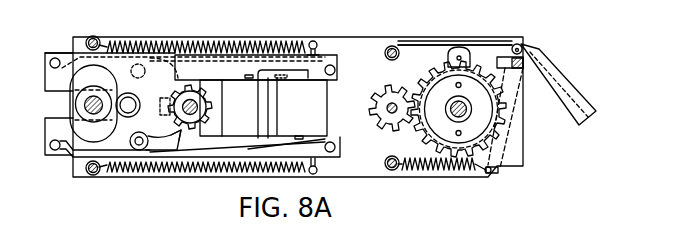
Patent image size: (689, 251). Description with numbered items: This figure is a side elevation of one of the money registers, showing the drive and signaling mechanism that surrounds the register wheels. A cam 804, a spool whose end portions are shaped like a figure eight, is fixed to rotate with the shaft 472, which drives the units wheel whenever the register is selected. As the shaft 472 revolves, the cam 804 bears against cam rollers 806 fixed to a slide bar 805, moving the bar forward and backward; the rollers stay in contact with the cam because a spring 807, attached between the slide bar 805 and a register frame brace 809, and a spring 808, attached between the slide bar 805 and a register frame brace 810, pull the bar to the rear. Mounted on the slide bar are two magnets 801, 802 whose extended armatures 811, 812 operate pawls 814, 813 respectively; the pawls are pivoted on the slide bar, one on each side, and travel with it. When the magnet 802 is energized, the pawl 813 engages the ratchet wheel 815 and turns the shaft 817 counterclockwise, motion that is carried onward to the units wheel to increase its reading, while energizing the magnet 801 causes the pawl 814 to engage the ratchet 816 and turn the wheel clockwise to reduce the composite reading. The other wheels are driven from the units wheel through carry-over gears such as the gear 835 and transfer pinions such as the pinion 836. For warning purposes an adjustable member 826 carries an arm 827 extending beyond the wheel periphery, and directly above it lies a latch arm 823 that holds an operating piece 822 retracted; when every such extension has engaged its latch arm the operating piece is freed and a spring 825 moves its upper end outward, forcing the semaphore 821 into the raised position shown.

The shaft 472 is at (86, 106).
The magnet 801 is at (227, 82).
The magnet 802 is at (326, 100).
The cam 804 is at (75, 102).
The slide bar 805 is at (45, 81).
The cam rollers 806 is at (137, 97).
The spring 807 is at (146, 40).
The spring 808 is at (270, 175).
The register frame brace 809 is at (93, 38).
The register frame brace 810 is at (85, 168).
The extended armature 811 is at (233, 149).
The extended armature 812 is at (212, 57).
The pawl 813 is at (165, 134).
The pawl 814 is at (182, 78).
The ratchet wheel 815 is at (182, 130).
The ratchet 816 is at (178, 60).
The shaft 817 is at (190, 99).
The semaphore 821 is at (577, 97).
The operating piece 822 is at (524, 69).
The latch arm 823 is at (467, 42).
The spring 825 is at (440, 177).
The adjustable member 826 is at (437, 66).
The arm 827 is at (452, 50).
The carry-over gear 835 is at (433, 73).
The transfer pinion 836 is at (375, 116).